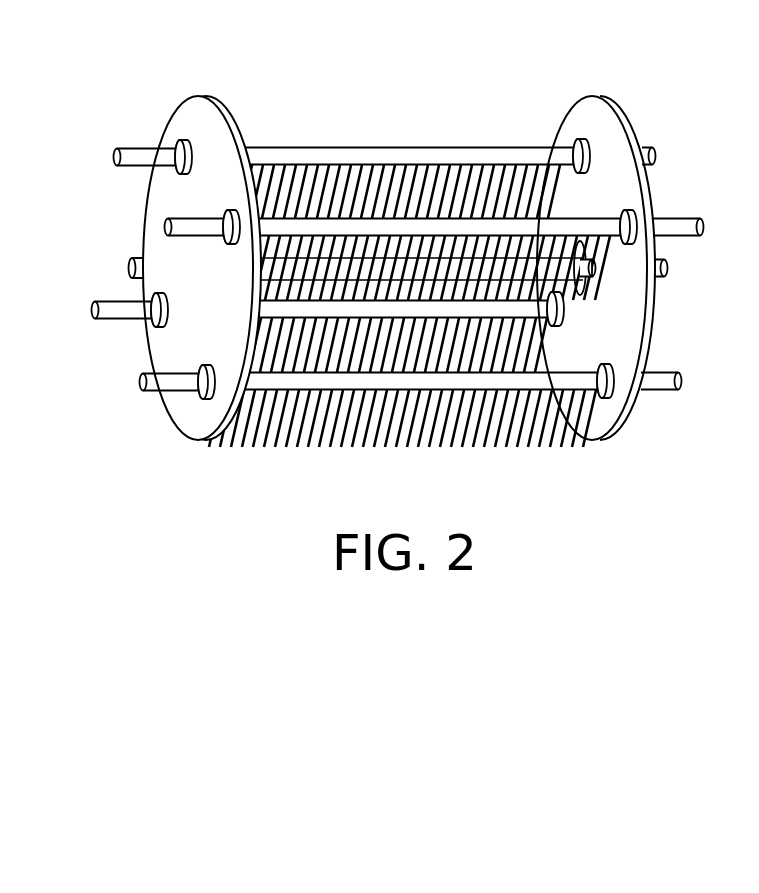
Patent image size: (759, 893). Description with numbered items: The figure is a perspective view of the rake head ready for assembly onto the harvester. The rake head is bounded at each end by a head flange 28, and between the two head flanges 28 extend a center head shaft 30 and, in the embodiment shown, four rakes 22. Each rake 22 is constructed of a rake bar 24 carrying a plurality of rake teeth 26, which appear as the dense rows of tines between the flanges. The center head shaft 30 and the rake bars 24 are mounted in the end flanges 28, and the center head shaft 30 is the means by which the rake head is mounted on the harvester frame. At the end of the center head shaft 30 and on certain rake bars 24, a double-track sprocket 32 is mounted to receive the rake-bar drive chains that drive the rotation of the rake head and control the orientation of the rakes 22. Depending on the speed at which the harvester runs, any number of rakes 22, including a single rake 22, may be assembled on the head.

The rake 22 is at (340, 153).
The rake bar 24 is at (423, 148).
The rake teeth 26 is at (513, 177).
The head flange 28 is at (190, 122).
The center head shaft 30 is at (137, 262).
The double-track sprocket 32 is at (584, 386).